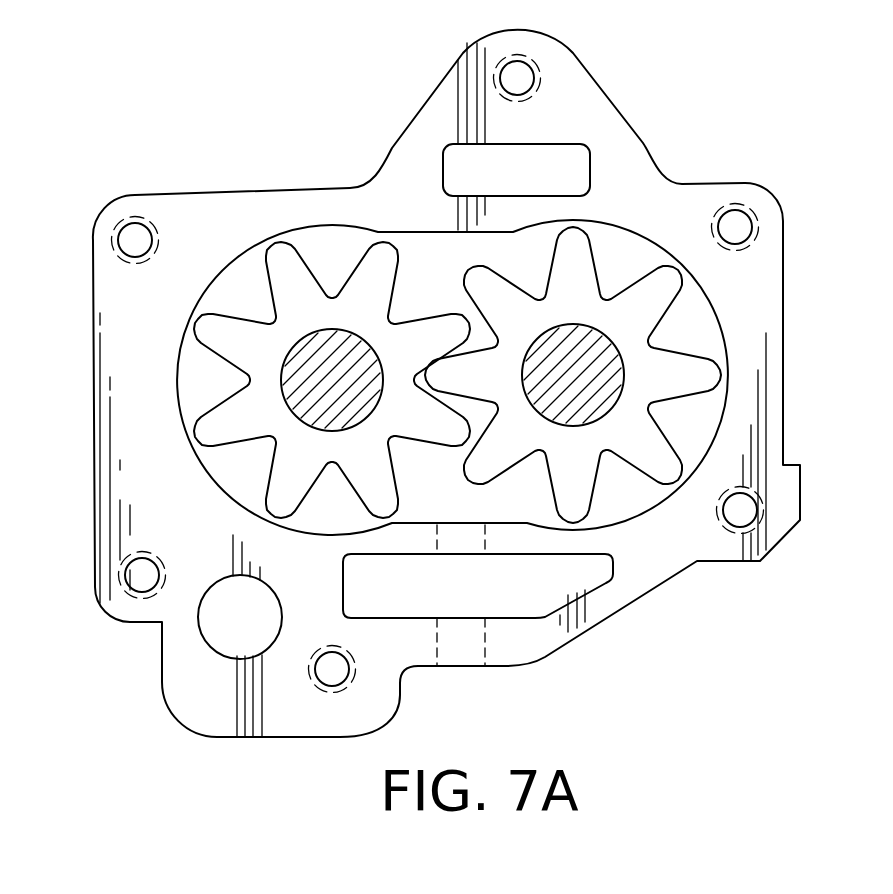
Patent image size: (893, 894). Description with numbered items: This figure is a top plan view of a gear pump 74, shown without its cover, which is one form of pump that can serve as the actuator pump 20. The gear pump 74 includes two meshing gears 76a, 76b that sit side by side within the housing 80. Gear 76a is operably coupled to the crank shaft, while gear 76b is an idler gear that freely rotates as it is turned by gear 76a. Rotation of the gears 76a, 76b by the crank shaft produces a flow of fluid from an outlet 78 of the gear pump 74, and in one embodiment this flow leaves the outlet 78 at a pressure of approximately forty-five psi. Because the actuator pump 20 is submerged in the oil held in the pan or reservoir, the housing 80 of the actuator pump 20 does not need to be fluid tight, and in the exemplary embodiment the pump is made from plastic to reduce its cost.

The actuator pump 20 is at (378, 50).
The gear pump 74 is at (378, 125).
The gear 76a is at (287, 350).
The idler gear 76b is at (600, 353).
The outlet 78 is at (484, 645).
The housing 80 is at (130, 431).